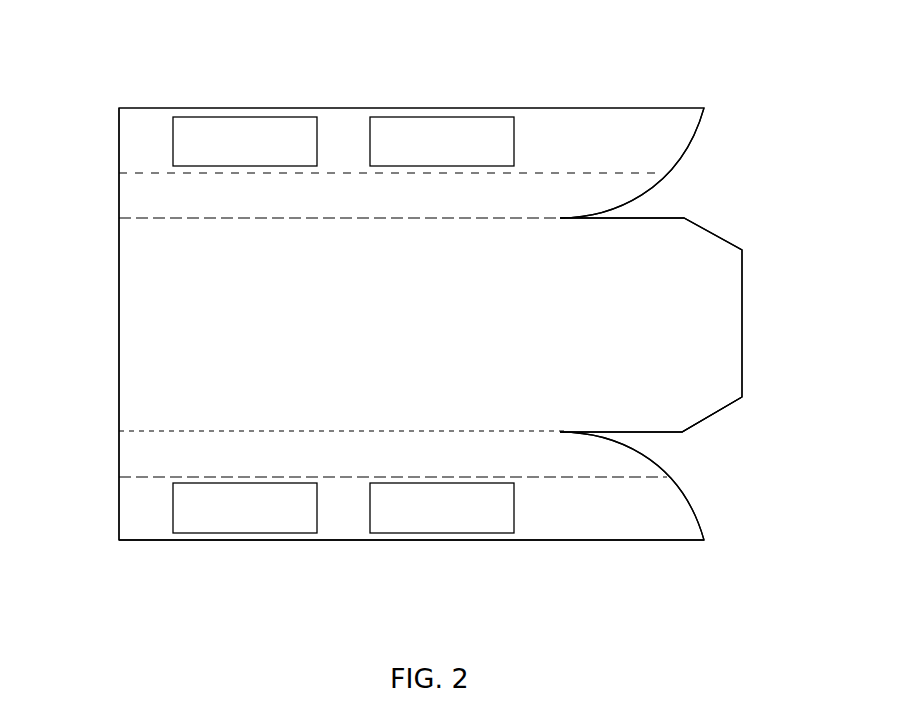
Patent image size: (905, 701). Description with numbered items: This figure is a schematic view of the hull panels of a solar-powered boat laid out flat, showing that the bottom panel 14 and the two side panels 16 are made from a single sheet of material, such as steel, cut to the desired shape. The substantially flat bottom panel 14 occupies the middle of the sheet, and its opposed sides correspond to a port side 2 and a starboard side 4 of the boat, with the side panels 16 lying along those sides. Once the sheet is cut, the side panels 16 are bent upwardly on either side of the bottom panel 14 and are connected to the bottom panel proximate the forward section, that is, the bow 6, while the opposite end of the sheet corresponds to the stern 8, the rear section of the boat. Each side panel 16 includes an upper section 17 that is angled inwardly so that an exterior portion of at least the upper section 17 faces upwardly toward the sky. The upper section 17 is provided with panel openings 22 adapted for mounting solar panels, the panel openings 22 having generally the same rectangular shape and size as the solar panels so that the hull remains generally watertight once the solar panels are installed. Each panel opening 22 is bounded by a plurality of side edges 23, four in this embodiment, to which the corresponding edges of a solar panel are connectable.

The port side 2 is at (470, 84).
The starboard side 4 is at (394, 556).
The bow 6 is at (760, 336).
The stern 8 is at (81, 326).
The bottom panel 14 is at (713, 403).
The side panels 16 is at (625, 189).
The upper section 17 is at (680, 139).
The panel opening 22 is at (387, 523).
The side edges 23 is at (317, 141).